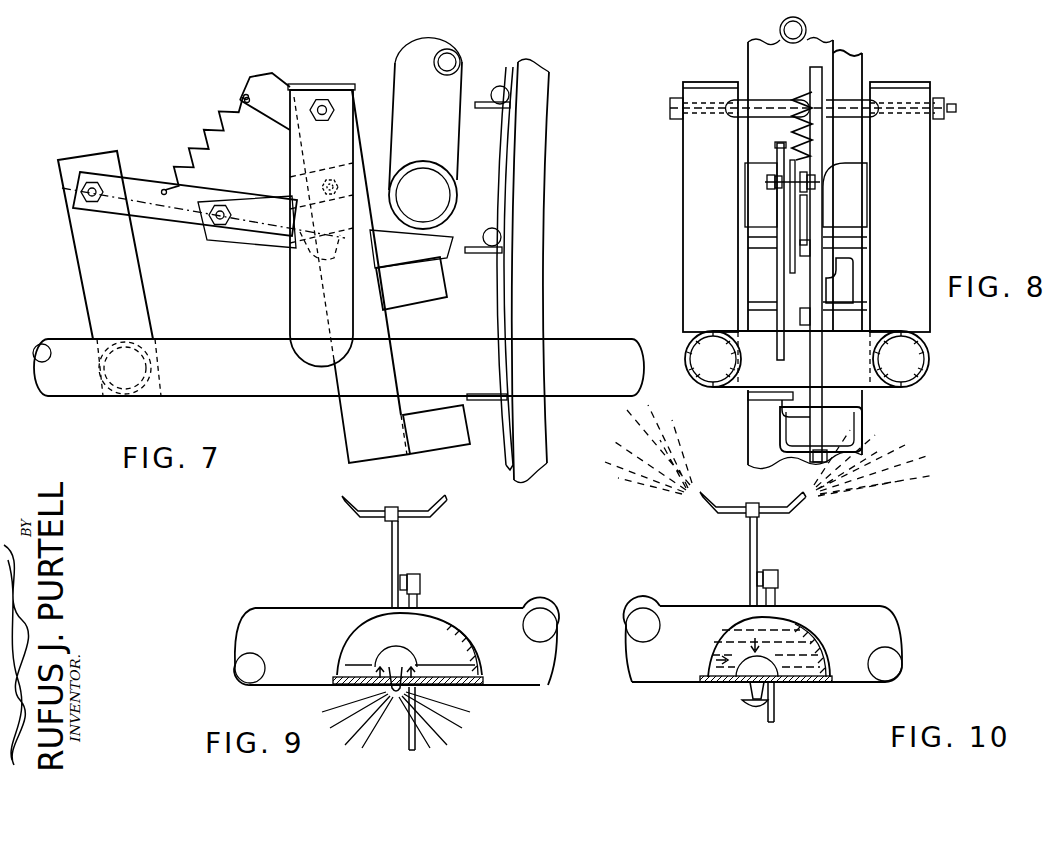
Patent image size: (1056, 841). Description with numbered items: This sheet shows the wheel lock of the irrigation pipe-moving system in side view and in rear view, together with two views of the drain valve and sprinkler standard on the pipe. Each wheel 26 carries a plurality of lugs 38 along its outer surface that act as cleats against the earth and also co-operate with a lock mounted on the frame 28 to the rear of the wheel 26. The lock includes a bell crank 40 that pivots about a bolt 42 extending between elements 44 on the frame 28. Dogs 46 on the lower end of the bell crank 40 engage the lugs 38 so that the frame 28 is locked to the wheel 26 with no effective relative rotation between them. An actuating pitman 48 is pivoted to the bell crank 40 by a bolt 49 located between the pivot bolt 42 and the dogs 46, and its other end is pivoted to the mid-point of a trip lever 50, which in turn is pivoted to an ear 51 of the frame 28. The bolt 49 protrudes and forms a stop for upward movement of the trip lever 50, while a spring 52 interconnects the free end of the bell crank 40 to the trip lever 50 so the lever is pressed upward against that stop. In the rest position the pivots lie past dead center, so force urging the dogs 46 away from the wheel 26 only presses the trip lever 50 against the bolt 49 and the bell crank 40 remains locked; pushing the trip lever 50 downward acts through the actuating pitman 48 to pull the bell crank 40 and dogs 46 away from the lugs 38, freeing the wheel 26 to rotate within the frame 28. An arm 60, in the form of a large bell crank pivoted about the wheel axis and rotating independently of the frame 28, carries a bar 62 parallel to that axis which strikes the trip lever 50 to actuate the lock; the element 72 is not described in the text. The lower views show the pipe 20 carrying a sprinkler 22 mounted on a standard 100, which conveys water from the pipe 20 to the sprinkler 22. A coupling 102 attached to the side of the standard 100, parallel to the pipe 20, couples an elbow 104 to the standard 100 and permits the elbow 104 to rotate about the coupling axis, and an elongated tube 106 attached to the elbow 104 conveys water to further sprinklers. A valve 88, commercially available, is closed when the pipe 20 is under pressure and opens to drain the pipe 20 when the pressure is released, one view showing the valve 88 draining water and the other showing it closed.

In FIG. 9, the pipe 20 is at (502, 617).
In FIG. 10, the pipe 20 is at (843, 615).
In FIG. 9, the sprinkler 22 is at (446, 500).
In FIG. 10, the sprinkler 22 is at (798, 498).
In FIG. 7, the wheel 26 is at (528, 143).
In FIG. 8, the wheel 26 is at (856, 48).
In FIG. 7, the frame 28 is at (85, 384).
In FIG. 8, the frame 28 is at (930, 357).
In FIG. 7, the lugs 38 is at (500, 102).
In FIG. 8, the lugs 38 is at (748, 397).
In FIG. 7, the bell crank 40 is at (288, 56).
In FIG. 8, the bell crank 40 is at (814, 67).
In FIG. 7, the bolt 42 is at (322, 106).
In FIG. 8, the bolt 42 is at (957, 108).
In FIG. 7, the elements 44 is at (305, 267).
In FIG. 8, the elements 44 is at (918, 183).
In FIG. 7, the dogs 46 is at (404, 296).
In FIG. 8, the dogs 46 is at (838, 283).
In FIG. 7, the actuating pitman 48 is at (258, 196).
In FIG. 8, the actuating pitman 48 is at (800, 222).
In FIG. 7, the bolt 49 is at (337, 180).
In FIG. 8, the bolt 49 is at (818, 182).
In FIG. 7, the trip lever 50 is at (274, 231).
In FIG. 8, the trip lever 50 is at (795, 244).
In FIG. 7, the ear 51 is at (90, 239).
In FIG. 8, the ear 51 is at (778, 278).
In FIG. 7, the spring 52 is at (202, 130).
In FIG. 7, the arm 60 is at (432, 145).
In FIG. 8, the arm 60 is at (822, 38).
In FIG. 7, the bar 62 is at (405, 175).
In FIG. 8, the bar 62 is at (857, 227).
In FIG. 7, the clip 72 is at (497, 237).
In FIG. 8, the clip 72 is at (782, 408).
In FIG. 9, the valve 88 is at (390, 690).
In FIG. 10, the valve 88 is at (751, 700).
In FIG. 9, the standard 100 is at (400, 543).
In FIG. 10, the standard 100 is at (758, 538).
In FIG. 9, the coupling 102 is at (402, 575).
In FIG. 10, the coupling 102 is at (763, 572).
In FIG. 9, the elbow 104 is at (421, 585).
In FIG. 10, the elbow 104 is at (778, 580).
In FIG. 9, the elongated tube 106 is at (418, 738).
In FIG. 10, the elongated tube 106 is at (777, 716).